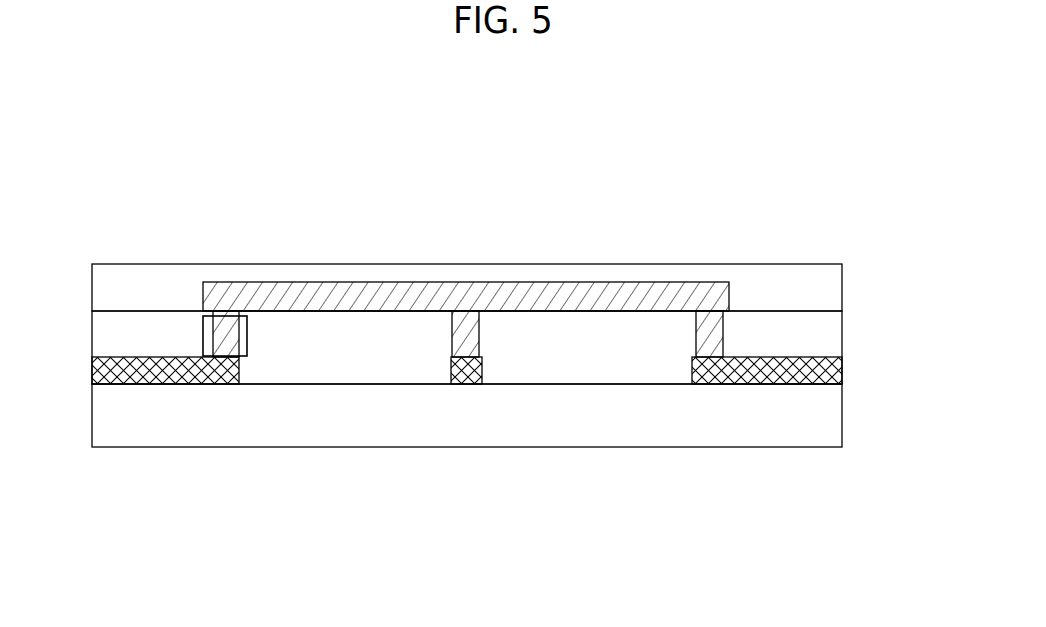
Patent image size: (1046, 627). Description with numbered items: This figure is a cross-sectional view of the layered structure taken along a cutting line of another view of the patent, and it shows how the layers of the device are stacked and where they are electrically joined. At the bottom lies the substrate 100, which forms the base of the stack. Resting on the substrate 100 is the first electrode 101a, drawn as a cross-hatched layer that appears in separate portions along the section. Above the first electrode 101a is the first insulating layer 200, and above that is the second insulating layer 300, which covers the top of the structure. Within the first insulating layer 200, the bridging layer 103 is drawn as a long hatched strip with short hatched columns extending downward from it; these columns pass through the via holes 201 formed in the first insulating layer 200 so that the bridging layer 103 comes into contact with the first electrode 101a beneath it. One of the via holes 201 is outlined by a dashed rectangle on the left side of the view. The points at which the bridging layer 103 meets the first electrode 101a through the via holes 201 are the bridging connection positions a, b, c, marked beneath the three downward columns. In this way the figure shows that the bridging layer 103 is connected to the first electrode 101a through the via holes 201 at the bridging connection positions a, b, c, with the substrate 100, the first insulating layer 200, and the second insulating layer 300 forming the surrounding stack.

The substrate 100 is at (807, 423).
The first electrode 101a is at (843, 365).
The bridging layer 103 is at (523, 295).
The first insulating layer 200 is at (807, 337).
The via hole 201 is at (206, 336).
The second insulating layer 300 is at (807, 286).
The bridging connection position a is at (218, 384).
The bridging connection position b is at (460, 384).
The bridging connection position c is at (705, 384).